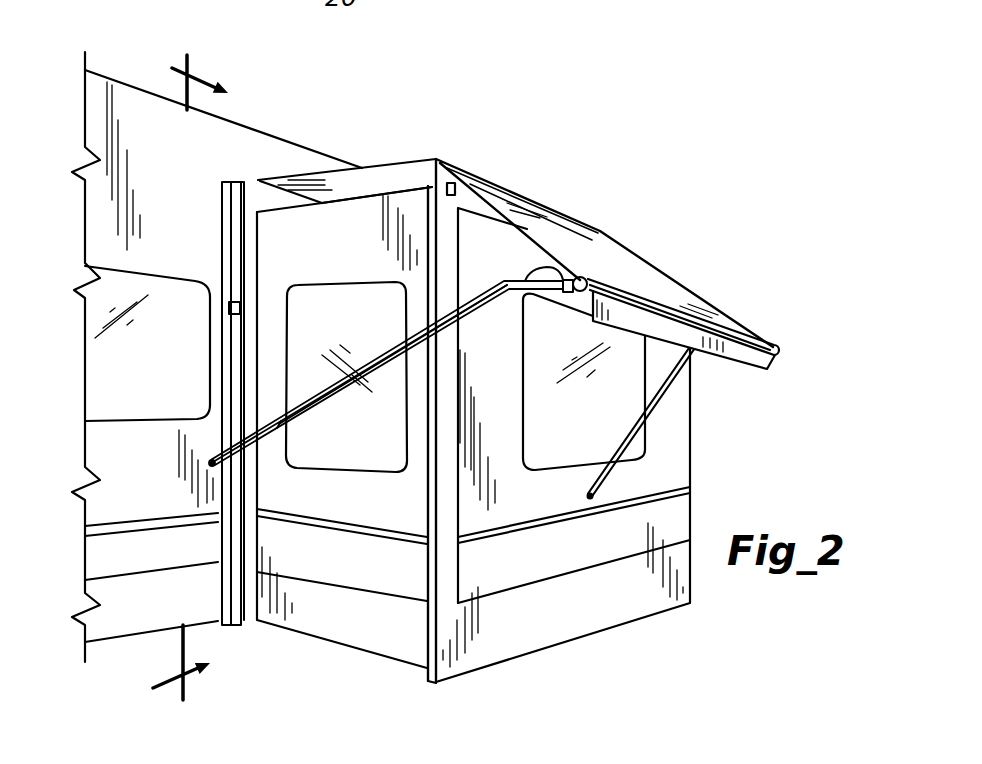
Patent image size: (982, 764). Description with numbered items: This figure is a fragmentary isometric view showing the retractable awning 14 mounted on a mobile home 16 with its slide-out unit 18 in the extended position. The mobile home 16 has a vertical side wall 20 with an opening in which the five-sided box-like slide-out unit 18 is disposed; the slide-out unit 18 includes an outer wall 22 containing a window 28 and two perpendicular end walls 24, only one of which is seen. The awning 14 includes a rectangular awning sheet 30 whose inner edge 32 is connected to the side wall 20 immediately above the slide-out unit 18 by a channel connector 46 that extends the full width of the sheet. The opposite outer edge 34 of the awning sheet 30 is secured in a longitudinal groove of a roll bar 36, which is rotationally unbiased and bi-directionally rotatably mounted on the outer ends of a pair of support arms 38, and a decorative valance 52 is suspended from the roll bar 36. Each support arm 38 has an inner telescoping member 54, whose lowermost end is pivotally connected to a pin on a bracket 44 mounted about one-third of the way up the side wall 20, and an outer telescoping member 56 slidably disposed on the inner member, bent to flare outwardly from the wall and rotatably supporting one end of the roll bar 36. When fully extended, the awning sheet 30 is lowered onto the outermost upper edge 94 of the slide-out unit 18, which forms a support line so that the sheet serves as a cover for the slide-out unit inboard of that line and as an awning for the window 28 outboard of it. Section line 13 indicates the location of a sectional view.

The section line 13- 13 is at (211, 377).
The retractable awning 14 is at (685, 225).
The mobile home 16 is at (130, 107).
The slide-out unit 18 is at (362, 618).
The side wall 20 is at (243, 145).
The outer wall 22 is at (600, 598).
The end wall 24 is at (398, 210).
The window 28 is at (533, 458).
The awning sheet 30 is at (579, 245).
The inner edge 32 is at (312, 168).
The outer edge 34 is at (754, 327).
The roll bar 36 is at (588, 277).
The support arm 38 is at (320, 400).
The mounting bracket 44 is at (207, 460).
The channel connector 46 is at (252, 177).
The decorative valance 52 is at (747, 357).
The inner telescoping member 54 is at (270, 453).
The outer telescoping member 56 is at (386, 365).
The outermost upper edge 94 is at (434, 160).